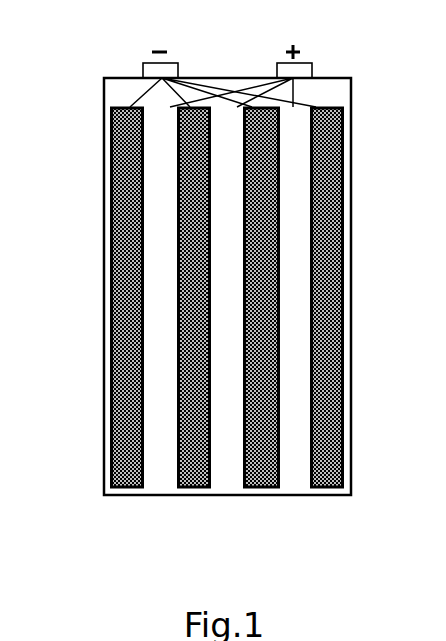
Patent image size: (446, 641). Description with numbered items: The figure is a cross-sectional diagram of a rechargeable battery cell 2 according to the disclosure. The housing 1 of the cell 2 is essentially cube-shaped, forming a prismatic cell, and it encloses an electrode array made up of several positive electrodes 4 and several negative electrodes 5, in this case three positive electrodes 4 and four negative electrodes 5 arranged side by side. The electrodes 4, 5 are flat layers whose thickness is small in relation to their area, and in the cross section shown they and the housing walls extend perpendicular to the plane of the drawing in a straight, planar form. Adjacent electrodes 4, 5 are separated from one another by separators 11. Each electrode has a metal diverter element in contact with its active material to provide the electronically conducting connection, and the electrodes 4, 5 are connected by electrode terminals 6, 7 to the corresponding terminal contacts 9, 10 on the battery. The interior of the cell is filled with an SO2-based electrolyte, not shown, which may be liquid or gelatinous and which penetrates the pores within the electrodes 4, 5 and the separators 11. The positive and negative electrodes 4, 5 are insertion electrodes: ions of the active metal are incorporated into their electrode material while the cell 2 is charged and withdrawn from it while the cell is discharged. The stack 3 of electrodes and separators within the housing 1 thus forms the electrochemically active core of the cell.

The housing 1 is at (352, 158).
The rechargeable battery cell 2 is at (99, 212).
The electrode stack 3 is at (225, 332).
The positive electrode 4 is at (158, 478).
The negative electrode 5 is at (128, 490).
The electrode terminal 6 is at (306, 84).
The electrode terminal 7 is at (145, 85).
The terminal contact 9 is at (303, 68).
The terminal contact 10 is at (170, 68).
The separator 11 is at (176, 328).